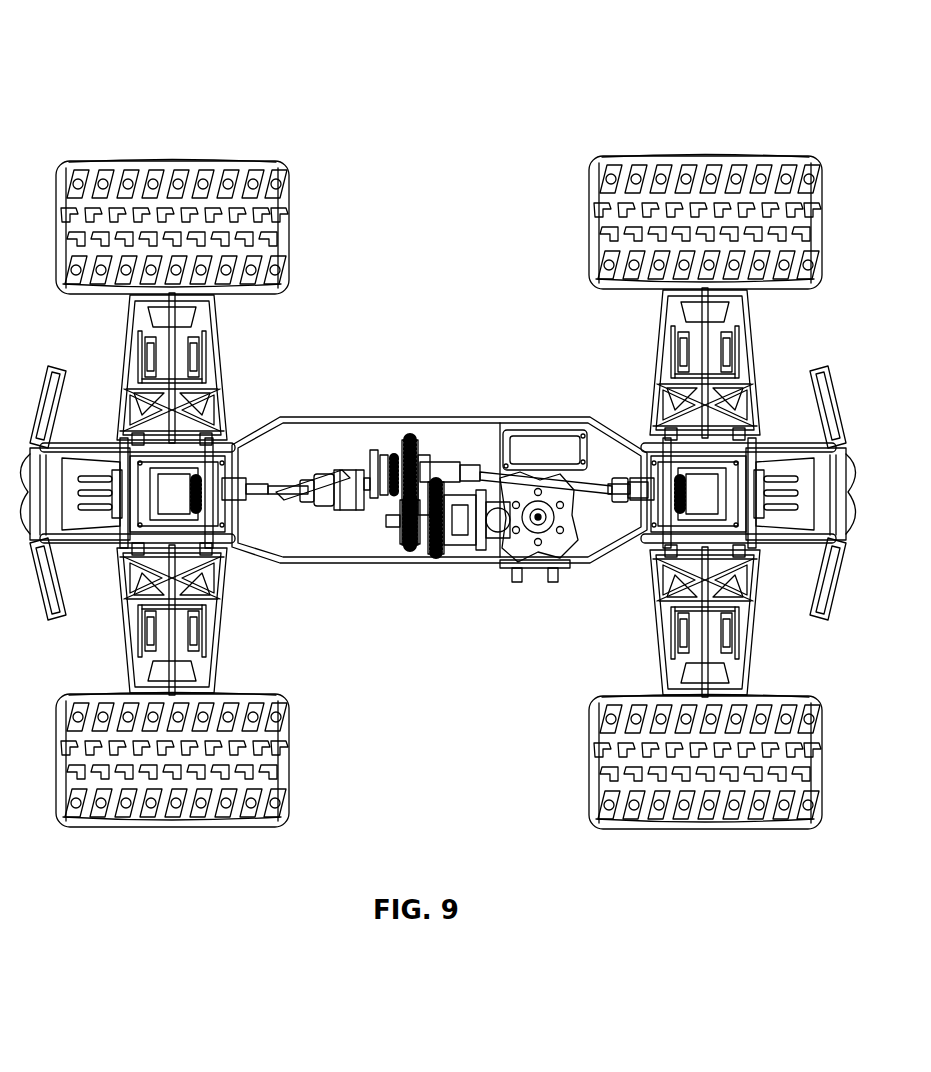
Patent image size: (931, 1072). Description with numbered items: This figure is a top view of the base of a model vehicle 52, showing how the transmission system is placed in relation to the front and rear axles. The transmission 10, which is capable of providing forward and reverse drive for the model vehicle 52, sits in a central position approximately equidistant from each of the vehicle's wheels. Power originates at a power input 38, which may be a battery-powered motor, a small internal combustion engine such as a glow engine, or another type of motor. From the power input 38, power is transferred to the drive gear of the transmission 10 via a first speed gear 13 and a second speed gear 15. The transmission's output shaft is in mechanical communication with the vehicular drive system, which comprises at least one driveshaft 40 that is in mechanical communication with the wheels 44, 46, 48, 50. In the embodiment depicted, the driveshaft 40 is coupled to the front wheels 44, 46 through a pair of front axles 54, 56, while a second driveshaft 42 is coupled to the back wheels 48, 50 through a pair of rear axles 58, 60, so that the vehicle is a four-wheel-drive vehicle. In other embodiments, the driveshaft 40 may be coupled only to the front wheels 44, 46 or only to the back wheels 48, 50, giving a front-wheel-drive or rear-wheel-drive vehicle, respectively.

The model vehicle 52 is at (437, 431).
The front wheel 44 is at (258, 236).
The front wheel 46 is at (255, 760).
The back wheel 48 is at (615, 760).
The back wheel 50 is at (612, 245).
The front axle 54 is at (178, 372).
The front axle 56 is at (170, 625).
The rear axle 58 is at (705, 370).
The rear axle 60 is at (705, 615).
The driveshaft 40 is at (292, 484).
The transmission 10 is at (378, 442).
The second speed gear 15 is at (409, 424).
The first speed gear 13 is at (404, 550).
The second driveshaft 42 is at (512, 468).
The power input 38 is at (518, 568).